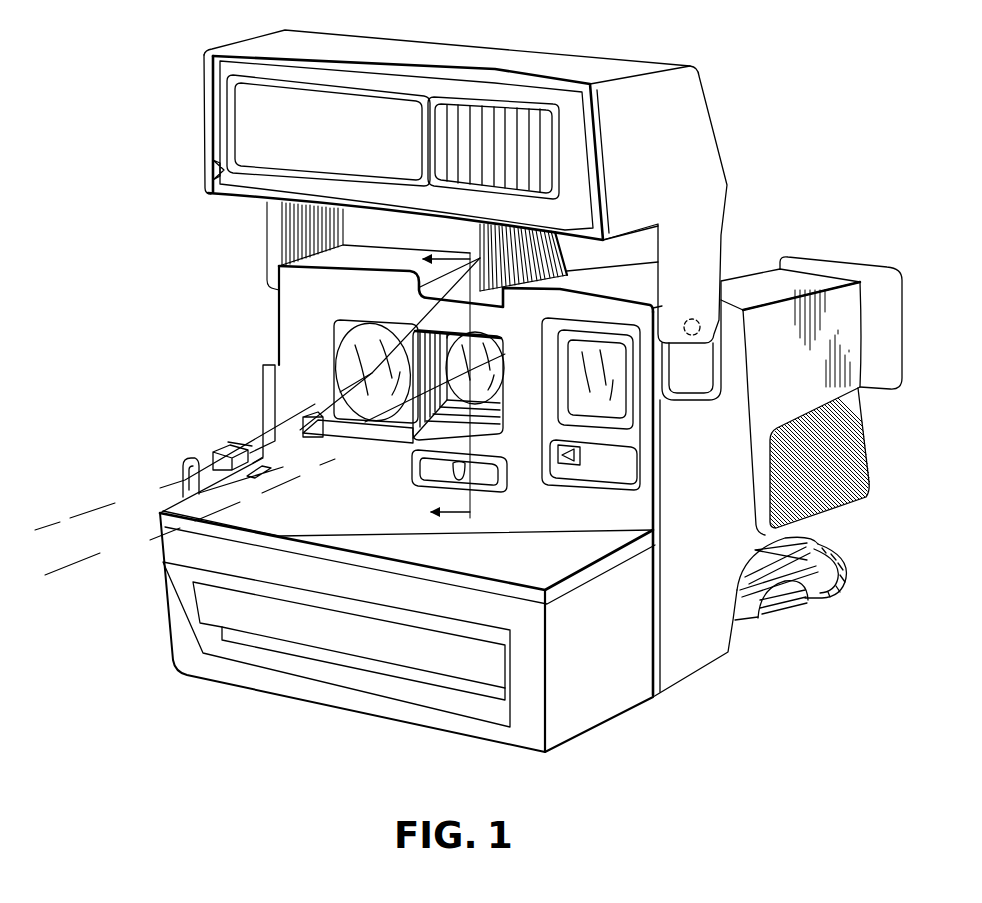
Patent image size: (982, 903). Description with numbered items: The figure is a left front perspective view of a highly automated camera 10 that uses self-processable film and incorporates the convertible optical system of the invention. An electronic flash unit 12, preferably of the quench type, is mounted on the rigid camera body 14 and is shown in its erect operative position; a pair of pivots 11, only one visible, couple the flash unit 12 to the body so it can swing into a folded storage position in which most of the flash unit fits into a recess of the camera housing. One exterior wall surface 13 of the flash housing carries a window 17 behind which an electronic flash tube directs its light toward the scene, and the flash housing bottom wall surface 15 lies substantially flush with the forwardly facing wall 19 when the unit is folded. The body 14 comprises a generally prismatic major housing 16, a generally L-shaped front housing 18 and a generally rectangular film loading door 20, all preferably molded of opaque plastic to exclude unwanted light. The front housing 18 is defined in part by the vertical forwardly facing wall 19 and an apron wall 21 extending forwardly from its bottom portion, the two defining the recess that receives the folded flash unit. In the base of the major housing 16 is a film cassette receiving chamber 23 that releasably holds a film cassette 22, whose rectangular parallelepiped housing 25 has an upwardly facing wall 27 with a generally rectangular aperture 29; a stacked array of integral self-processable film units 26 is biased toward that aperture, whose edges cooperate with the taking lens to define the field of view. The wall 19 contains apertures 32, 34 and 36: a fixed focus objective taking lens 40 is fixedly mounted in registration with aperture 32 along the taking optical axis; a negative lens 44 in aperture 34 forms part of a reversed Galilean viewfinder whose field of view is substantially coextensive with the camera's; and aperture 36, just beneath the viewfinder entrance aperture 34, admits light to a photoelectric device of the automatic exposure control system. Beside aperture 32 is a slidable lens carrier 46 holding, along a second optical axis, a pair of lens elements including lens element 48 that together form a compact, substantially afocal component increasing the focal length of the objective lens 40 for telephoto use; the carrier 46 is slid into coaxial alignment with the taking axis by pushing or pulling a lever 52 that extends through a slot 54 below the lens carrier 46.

The camera 10 is at (776, 204).
The pivots 11 is at (700, 318).
The electronic flash unit 12 is at (716, 123).
The exterior wall surface 13 is at (222, 84).
The rigid camera body 14 is at (836, 437).
The flash unit housing bottom wall surface 15 is at (617, 238).
The major housing 16 is at (727, 646).
The window 17 is at (496, 103).
The front housing 18 is at (296, 302).
The forwardly facing wall 19 is at (283, 391).
The film loading door 20 is at (591, 736).
The apron wall 21 is at (470, 574).
The film cassette 22 is at (816, 586).
The film cassette receiving chamber 23 is at (821, 542).
The cassette housing 25 is at (748, 622).
The film units 26 is at (790, 603).
The upwardly facing wall 27 is at (745, 577).
The aperture 29 is at (757, 553).
The aperture 32 is at (500, 350).
The viewfinder entrance aperture 34 is at (604, 337).
The aperture 36 is at (581, 461).
The objective taking lens 40 is at (497, 390).
The negative lens 44 is at (612, 400).
The lens carrier 46 is at (403, 337).
The lens element 48 is at (356, 336).
The lever 52 is at (310, 430).
The slot 54 is at (390, 440).